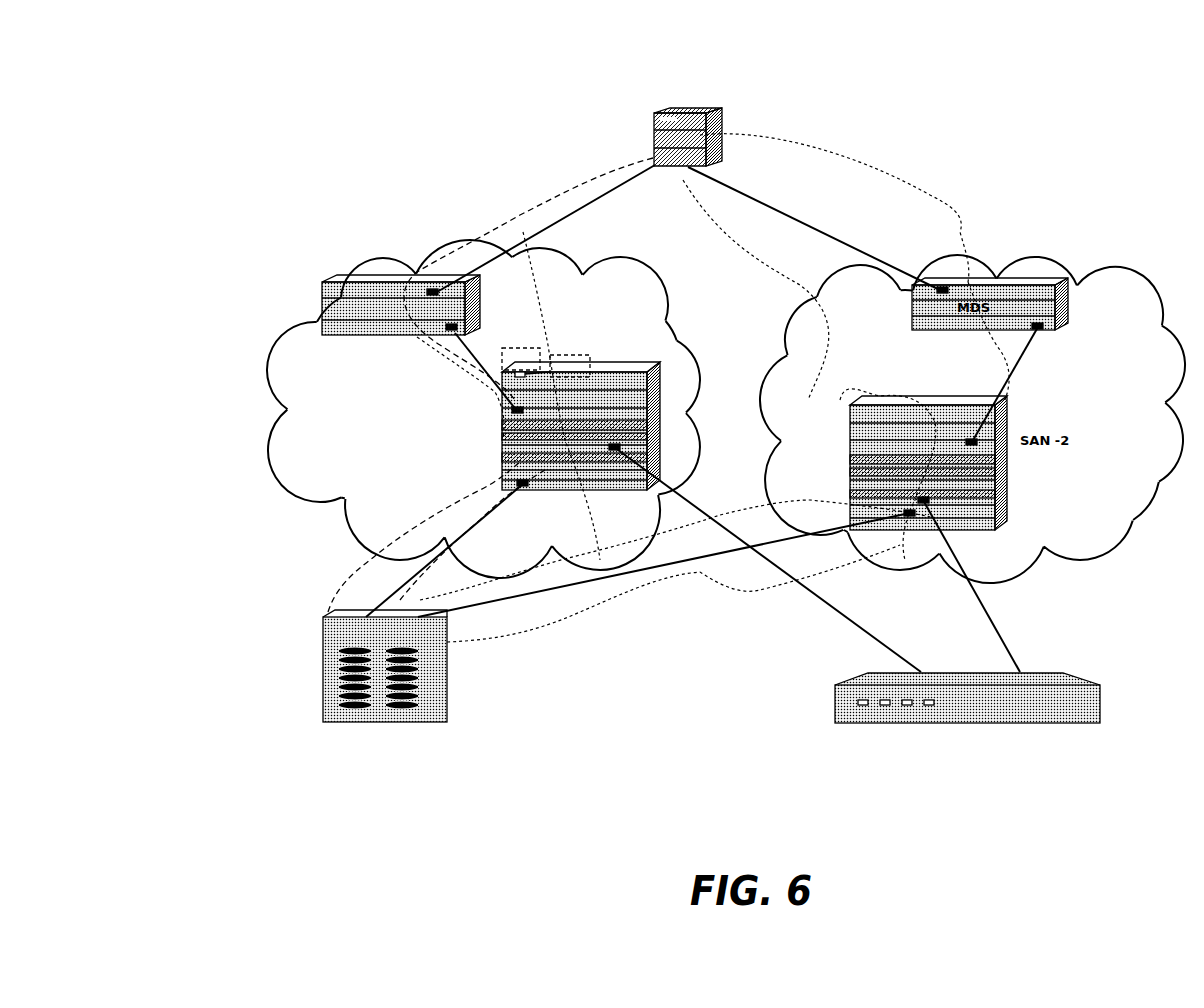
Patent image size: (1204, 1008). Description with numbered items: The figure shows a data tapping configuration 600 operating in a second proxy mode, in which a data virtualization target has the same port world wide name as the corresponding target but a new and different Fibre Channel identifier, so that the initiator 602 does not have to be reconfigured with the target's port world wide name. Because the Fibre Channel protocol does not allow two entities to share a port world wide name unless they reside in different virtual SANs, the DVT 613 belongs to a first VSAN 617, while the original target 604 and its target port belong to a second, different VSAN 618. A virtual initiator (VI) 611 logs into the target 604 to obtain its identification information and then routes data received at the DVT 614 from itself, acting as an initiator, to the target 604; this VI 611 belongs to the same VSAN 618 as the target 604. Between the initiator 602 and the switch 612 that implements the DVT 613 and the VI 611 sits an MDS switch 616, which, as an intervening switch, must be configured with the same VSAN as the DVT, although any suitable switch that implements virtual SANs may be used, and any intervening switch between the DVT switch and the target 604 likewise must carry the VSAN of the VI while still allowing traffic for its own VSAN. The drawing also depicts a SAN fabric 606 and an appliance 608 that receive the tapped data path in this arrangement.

The data tapping configuration 600 is at (197, 65).
The initiator 602 is at (655, 116).
The target 604 is at (323, 695).
The SAN-1 fabric 606 is at (268, 450).
The appliance 608 is at (835, 722).
The virtual initiator (VI) 611 is at (532, 402).
The switch 612 is at (502, 456).
The DVT 613 is at (545, 350).
The DVT 614 is at (502, 396).
The MDS switch 616 is at (322, 305).
The first VSAN 617 is at (520, 217).
The second VSAN 618 is at (335, 590).